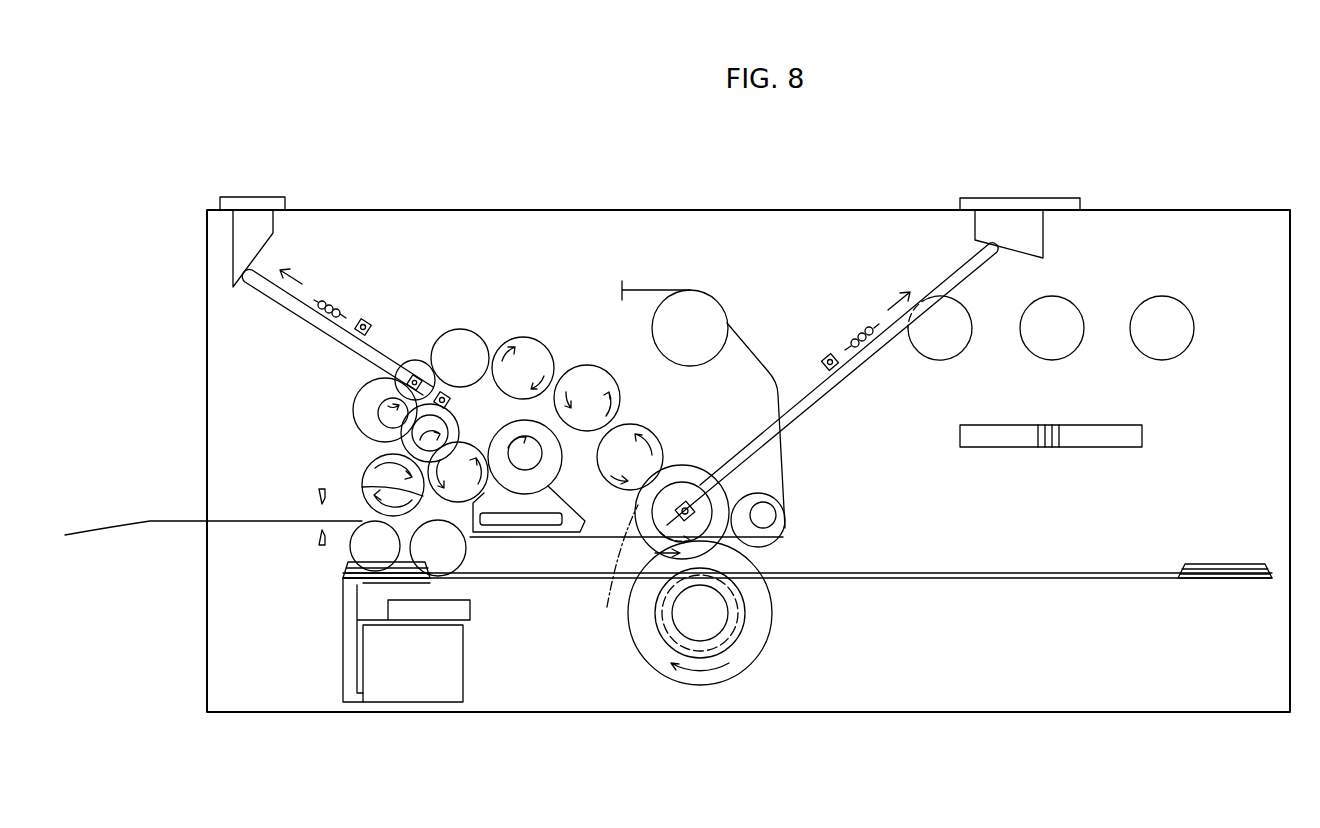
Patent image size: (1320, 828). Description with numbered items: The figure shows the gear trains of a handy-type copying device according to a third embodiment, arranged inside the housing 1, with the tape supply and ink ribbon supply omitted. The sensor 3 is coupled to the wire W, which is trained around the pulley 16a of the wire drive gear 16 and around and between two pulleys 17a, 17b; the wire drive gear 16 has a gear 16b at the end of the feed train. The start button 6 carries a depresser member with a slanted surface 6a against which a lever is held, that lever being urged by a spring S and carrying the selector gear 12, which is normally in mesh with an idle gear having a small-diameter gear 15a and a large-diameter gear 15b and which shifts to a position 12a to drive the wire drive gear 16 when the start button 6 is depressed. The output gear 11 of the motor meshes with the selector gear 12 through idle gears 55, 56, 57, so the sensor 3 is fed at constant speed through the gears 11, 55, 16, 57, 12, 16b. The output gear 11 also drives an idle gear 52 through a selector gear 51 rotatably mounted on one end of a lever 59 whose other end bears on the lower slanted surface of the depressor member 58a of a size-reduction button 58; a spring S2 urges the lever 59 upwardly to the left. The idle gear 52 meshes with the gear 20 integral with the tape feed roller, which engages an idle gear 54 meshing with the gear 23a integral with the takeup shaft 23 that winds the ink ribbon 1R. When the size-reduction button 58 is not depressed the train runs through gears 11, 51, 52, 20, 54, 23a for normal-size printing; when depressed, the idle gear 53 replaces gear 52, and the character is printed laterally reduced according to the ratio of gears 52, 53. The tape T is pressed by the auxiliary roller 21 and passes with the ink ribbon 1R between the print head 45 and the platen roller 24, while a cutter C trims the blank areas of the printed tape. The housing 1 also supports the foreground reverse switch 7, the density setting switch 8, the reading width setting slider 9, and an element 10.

The housing 1 is at (1156, 210).
The sensor 3 is at (462, 661).
The start button 6 is at (1030, 198).
The slanted surface 6a is at (1033, 238).
The foreground reverse switch 7 is at (945, 345).
The density setting switch 8 is at (1058, 345).
The reading width setting slider 9 is at (1168, 345).
The guide plate 10 is at (1048, 447).
The output gear 11 is at (460, 340).
The selector gear 12 is at (679, 466).
The position of selector gear 12a is at (601, 563).
The small-diameter gear 15a is at (772, 542).
The large-diameter gear 15b is at (785, 523).
The wire drive gear 16 is at (656, 624).
The pulley 16a is at (713, 617).
The gear 16b is at (760, 612).
The pulley 17a is at (345, 572).
The pulley 17b is at (1225, 580).
The tape feed roller gear 20 is at (369, 456).
The auxiliary roller 21 is at (360, 543).
The takeup shaft 23 is at (585, 515).
The gear 23a is at (536, 466).
The platen roller 24 is at (452, 549).
The print head 45 is at (541, 525).
The selector gear 51 is at (413, 361).
The idle gear 52 is at (354, 409).
The idle gear 53 is at (459, 418).
The idle gear 54 is at (364, 478).
The idle gear 55 is at (523, 338).
The idle gear 56 is at (588, 366).
The idle gear 57 is at (646, 428).
The size-reduction button 58 is at (257, 197).
The depressor member 58a is at (237, 290).
The lever 59 is at (312, 326).
The ink ribbon 1R is at (590, 528).
The cutter C is at (312, 492).
The spring S is at (875, 323).
The spring S2 is at (326, 300).
The tape T is at (152, 517).
The wire W is at (1060, 580).